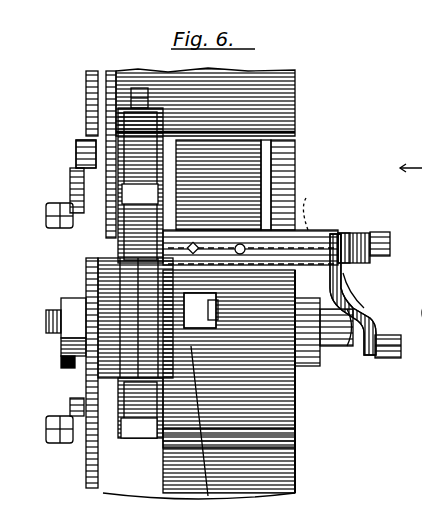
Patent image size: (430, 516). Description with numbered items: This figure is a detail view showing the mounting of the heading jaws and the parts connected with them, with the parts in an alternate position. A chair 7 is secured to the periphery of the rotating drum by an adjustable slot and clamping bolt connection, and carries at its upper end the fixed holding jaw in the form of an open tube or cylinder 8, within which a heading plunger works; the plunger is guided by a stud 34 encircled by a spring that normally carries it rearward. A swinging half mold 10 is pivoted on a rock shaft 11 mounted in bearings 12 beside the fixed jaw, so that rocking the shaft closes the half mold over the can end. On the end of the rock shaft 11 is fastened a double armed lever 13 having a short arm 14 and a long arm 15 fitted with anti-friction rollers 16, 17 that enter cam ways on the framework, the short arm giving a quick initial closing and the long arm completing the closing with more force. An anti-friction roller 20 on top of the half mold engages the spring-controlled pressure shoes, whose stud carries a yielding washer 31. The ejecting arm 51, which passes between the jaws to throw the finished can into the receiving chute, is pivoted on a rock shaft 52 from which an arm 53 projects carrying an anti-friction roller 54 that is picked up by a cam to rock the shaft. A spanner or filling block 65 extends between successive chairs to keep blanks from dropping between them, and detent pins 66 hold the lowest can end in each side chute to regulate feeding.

The chair 7 is at (256, 166).
The tube or cylinder 8 is at (283, 378).
The swinging half mold 10 is at (200, 488).
The rock shaft 11 is at (296, 215).
The bearing 12 is at (283, 203).
The double armed lever 13 is at (338, 226).
The short arm 14 is at (370, 270).
The long arm 15 is at (366, 292).
The anti-friction roller 16 is at (383, 228).
The anti-friction roller 17 is at (380, 328).
The anti-friction roller 20 is at (205, 305).
The yielding washer 31 is at (262, 438).
The stud 34 is at (333, 340).
The ejecting arm 51 is at (133, 80).
The rock shaft 52 is at (72, 162).
The arm 53 is at (75, 184).
The anti-friction roller 54 is at (52, 221).
The spanner or filling block 65 is at (140, 185).
The pin 66 is at (135, 348).